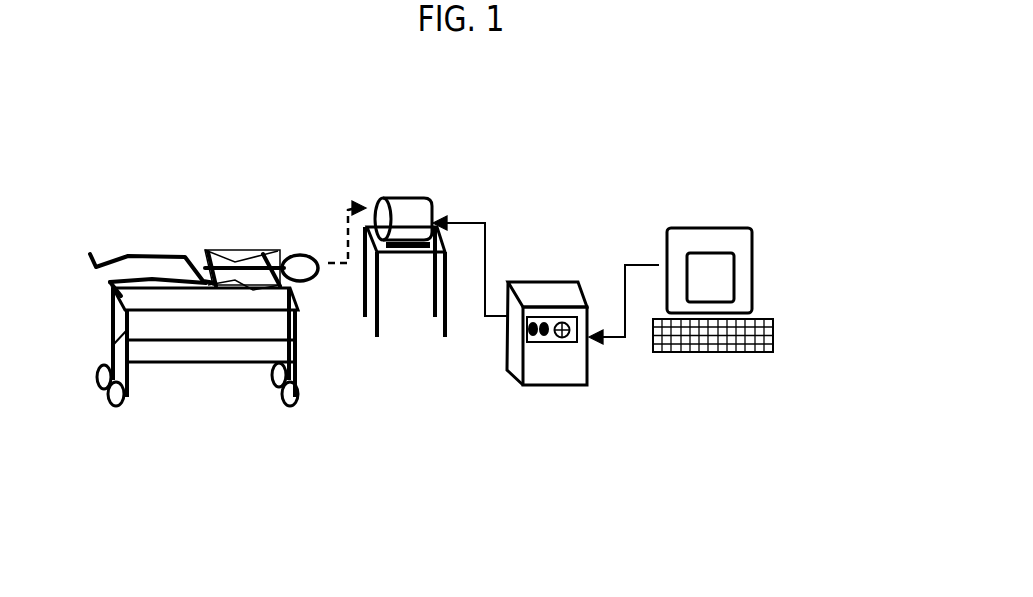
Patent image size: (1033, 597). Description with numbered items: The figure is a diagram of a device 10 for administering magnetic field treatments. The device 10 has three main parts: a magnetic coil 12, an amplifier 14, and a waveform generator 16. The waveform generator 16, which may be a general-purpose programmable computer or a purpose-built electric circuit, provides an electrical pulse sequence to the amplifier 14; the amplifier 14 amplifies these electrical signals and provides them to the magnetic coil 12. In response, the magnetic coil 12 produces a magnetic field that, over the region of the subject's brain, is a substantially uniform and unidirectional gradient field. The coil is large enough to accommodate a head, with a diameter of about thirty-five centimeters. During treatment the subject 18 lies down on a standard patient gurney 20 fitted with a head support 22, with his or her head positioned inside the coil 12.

The device 10 is at (483, 437).
The magnetic coil 12 is at (418, 190).
The amplifier 14 is at (542, 280).
The waveform generator 16 is at (699, 228).
The subject 18 is at (170, 245).
The patient gurney 20 is at (187, 370).
The head support 22 is at (278, 245).